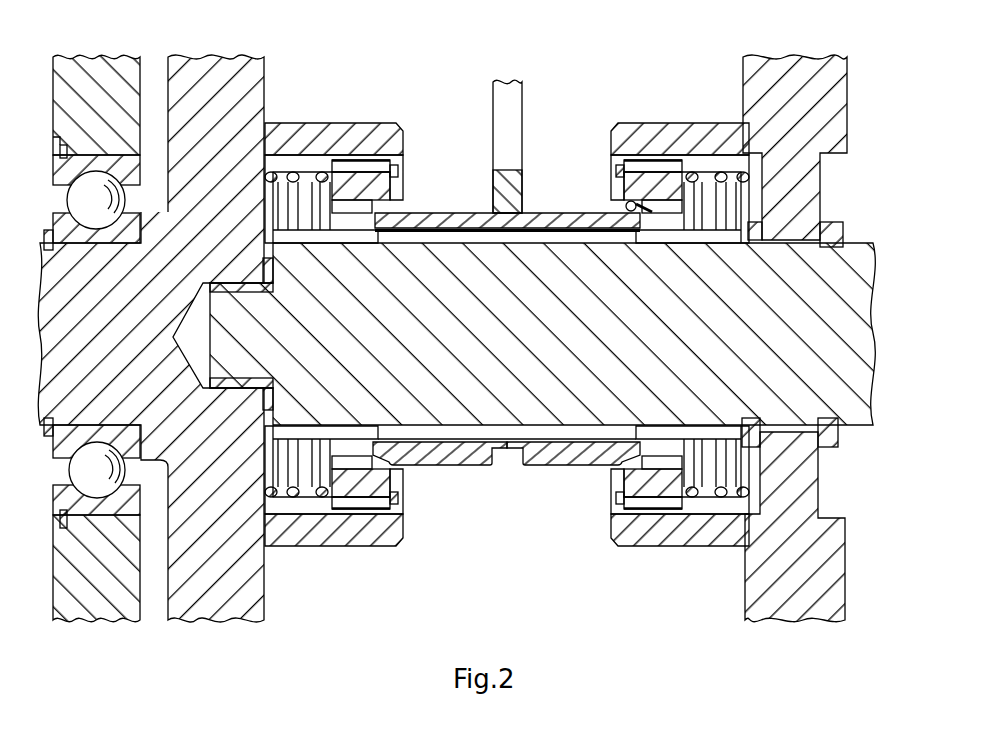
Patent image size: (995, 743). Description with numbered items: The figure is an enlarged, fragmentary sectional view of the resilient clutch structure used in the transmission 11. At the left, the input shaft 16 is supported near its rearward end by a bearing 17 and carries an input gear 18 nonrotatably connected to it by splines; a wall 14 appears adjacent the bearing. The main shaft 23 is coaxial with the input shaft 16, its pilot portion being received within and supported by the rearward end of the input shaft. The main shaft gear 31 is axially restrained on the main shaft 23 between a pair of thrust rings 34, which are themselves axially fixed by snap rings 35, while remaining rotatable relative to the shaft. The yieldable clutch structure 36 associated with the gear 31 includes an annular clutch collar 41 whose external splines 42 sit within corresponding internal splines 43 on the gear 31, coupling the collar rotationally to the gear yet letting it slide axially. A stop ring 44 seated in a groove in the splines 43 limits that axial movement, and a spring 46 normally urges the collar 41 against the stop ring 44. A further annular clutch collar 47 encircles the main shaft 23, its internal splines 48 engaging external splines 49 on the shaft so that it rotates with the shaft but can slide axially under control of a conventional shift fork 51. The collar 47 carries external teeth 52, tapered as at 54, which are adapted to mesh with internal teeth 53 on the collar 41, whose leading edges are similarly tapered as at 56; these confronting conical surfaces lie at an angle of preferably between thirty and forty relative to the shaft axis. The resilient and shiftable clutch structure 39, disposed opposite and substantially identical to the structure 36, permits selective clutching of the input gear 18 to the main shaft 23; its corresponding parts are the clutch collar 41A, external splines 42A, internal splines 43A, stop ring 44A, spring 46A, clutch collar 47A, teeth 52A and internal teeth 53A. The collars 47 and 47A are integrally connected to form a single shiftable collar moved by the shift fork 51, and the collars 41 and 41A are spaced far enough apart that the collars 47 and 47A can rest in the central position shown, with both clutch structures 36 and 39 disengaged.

The transmission 11 is at (578, 7).
The housing wall 14 is at (125, 62).
The input shaft 16 is at (98, 348).
The bearing 17 is at (118, 200).
The input gear 18 is at (238, 63).
The main shaft 23 is at (858, 306).
The main shaft gear 31 is at (834, 57).
The thrust rings 34 is at (832, 226).
The snap rings 35 is at (834, 245).
The yieldable clutch structure 36 is at (565, 122).
The resilient and shiftable clutch structure 39 is at (417, 505).
The annular clutch collar 41 is at (640, 477).
The annular clutch collar 41A is at (353, 170).
The external splines 42 is at (646, 172).
The external splines 42A is at (378, 188).
The internal splines 43 is at (720, 162).
The internal splines 43A is at (288, 163).
The stop ring 44 is at (626, 504).
The stop ring 44A is at (397, 170).
The spring 46 is at (708, 490).
The spring 46A is at (304, 478).
The annular clutch collar 47 is at (548, 222).
The annular clutch collar 47A is at (467, 222).
The internal splines 48 is at (585, 235).
The external splines 49 is at (722, 238).
The shift fork 51 is at (498, 100).
The external teeth 52 is at (550, 463).
The external teeth 52A is at (444, 463).
The internal teeth 53 is at (668, 212).
The internal teeth 53A is at (355, 210).
The tapered conical surface 54 is at (650, 212).
The tapered conical surface 56 is at (628, 204).